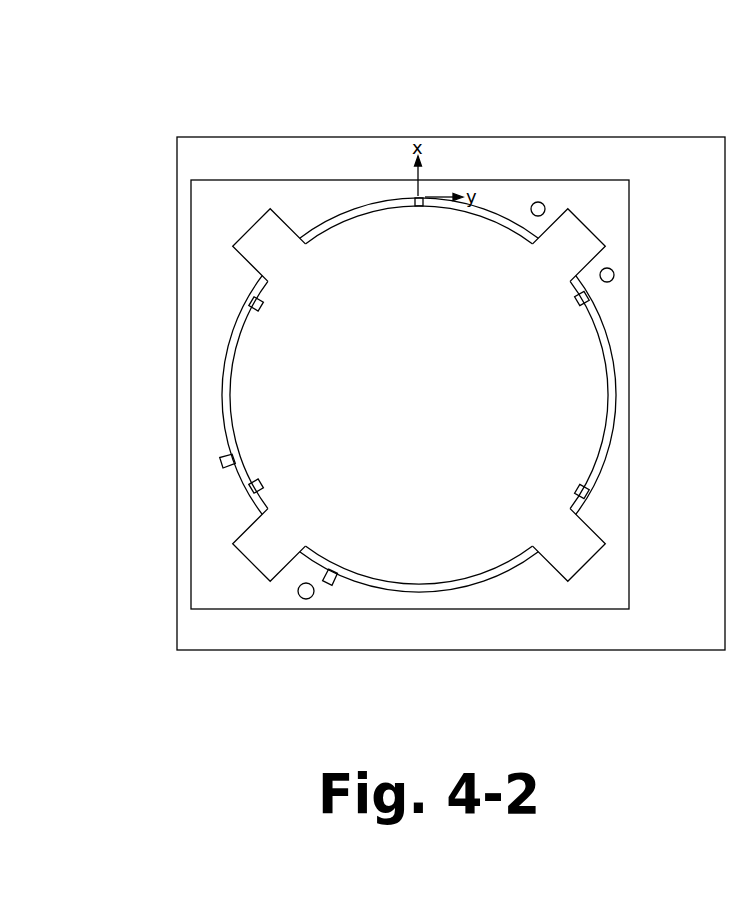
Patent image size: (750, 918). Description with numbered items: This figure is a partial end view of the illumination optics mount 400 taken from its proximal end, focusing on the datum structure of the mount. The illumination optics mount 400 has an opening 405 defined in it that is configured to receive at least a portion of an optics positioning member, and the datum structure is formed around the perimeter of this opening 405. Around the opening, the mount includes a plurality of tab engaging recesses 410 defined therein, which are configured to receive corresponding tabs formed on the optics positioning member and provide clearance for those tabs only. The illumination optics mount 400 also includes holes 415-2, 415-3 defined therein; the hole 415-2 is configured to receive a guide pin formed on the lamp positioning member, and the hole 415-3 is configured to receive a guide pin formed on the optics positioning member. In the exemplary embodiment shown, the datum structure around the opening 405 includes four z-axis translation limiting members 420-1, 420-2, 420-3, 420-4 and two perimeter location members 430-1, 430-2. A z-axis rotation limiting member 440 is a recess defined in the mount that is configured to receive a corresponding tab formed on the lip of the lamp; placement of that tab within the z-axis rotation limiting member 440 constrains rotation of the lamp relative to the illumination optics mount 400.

The illumination optics mount 400 is at (193, 137).
The opening 405 is at (452, 406).
The tab engaging recesses 410 is at (290, 214).
The hole 415-2 is at (538, 194).
The hole 415-3 is at (306, 608).
The z-axis translation limiting member 420-1 is at (250, 302).
The z-axis translation limiting member 420-2 is at (252, 490).
The z-axis translation limiting member 420-3 is at (583, 458).
The z-axis translation limiting member 420-4 is at (580, 318).
The perimeter location member 430-1 is at (222, 463).
The perimeter location member 430-2 is at (330, 588).
The z-axis rotation limiting member 440 is at (419, 214).